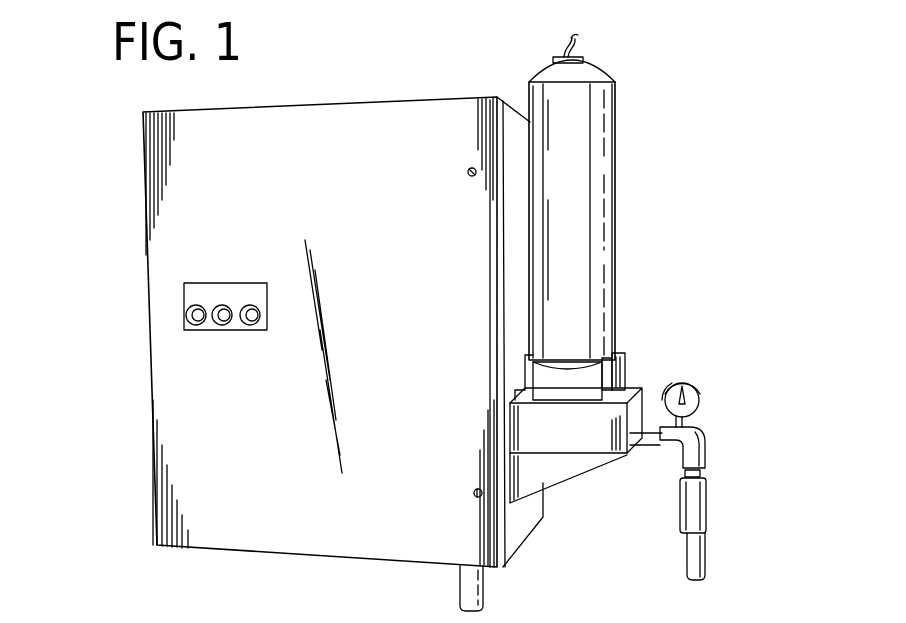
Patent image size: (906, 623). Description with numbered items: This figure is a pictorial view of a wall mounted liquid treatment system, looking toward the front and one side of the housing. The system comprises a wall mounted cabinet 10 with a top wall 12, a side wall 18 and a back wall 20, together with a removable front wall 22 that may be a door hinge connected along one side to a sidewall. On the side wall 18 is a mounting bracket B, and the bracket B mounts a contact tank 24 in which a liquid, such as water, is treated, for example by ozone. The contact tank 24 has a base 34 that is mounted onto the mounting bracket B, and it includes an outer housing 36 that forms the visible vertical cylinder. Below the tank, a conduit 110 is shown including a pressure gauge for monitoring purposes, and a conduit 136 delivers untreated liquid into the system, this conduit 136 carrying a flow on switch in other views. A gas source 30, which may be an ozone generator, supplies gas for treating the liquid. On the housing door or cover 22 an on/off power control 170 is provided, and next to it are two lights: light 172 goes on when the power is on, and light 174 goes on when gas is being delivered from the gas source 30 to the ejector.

The wall mounted cabinet 10 is at (195, 349).
The removable front wall 22 is at (172, 187).
The contact tank 24 is at (615, 195).
The outer housing 36 is at (601, 113).
The base 34 is at (643, 367).
The mounting bracket B is at (583, 463).
The side wall 18 is at (530, 527).
The conduit 110 is at (704, 446).
The conduit 136 is at (462, 582).
The on/off power control 170 is at (188, 315).
The light 172 is at (224, 306).
The light 174 is at (249, 323).
The back wall 20 is at (170, 619).
The top wall 12 is at (294, 619).
The gas source 30 is at (368, 619).